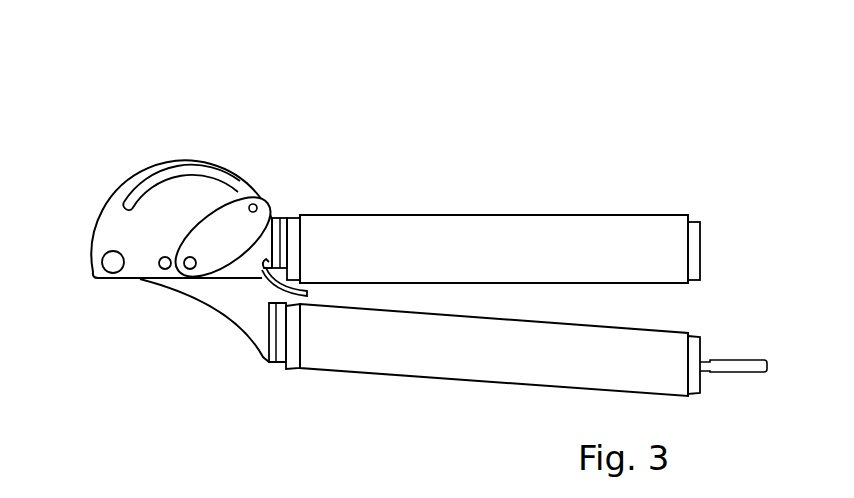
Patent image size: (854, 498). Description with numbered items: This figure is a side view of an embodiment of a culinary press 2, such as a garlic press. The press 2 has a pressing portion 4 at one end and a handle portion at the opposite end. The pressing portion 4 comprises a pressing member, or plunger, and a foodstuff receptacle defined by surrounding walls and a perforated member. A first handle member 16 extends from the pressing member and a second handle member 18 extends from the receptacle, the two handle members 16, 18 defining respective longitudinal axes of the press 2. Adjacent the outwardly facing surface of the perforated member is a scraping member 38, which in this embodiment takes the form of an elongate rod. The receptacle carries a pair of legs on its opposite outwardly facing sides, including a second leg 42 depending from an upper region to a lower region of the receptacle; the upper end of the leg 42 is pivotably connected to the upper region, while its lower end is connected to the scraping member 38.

The culinary press 2 is at (429, 235).
The pressing portion 4 is at (199, 207).
The first handle member 16 is at (488, 365).
The second handle member 18 is at (475, 238).
The scraping member 38 is at (256, 205).
The second leg 42 is at (220, 240).